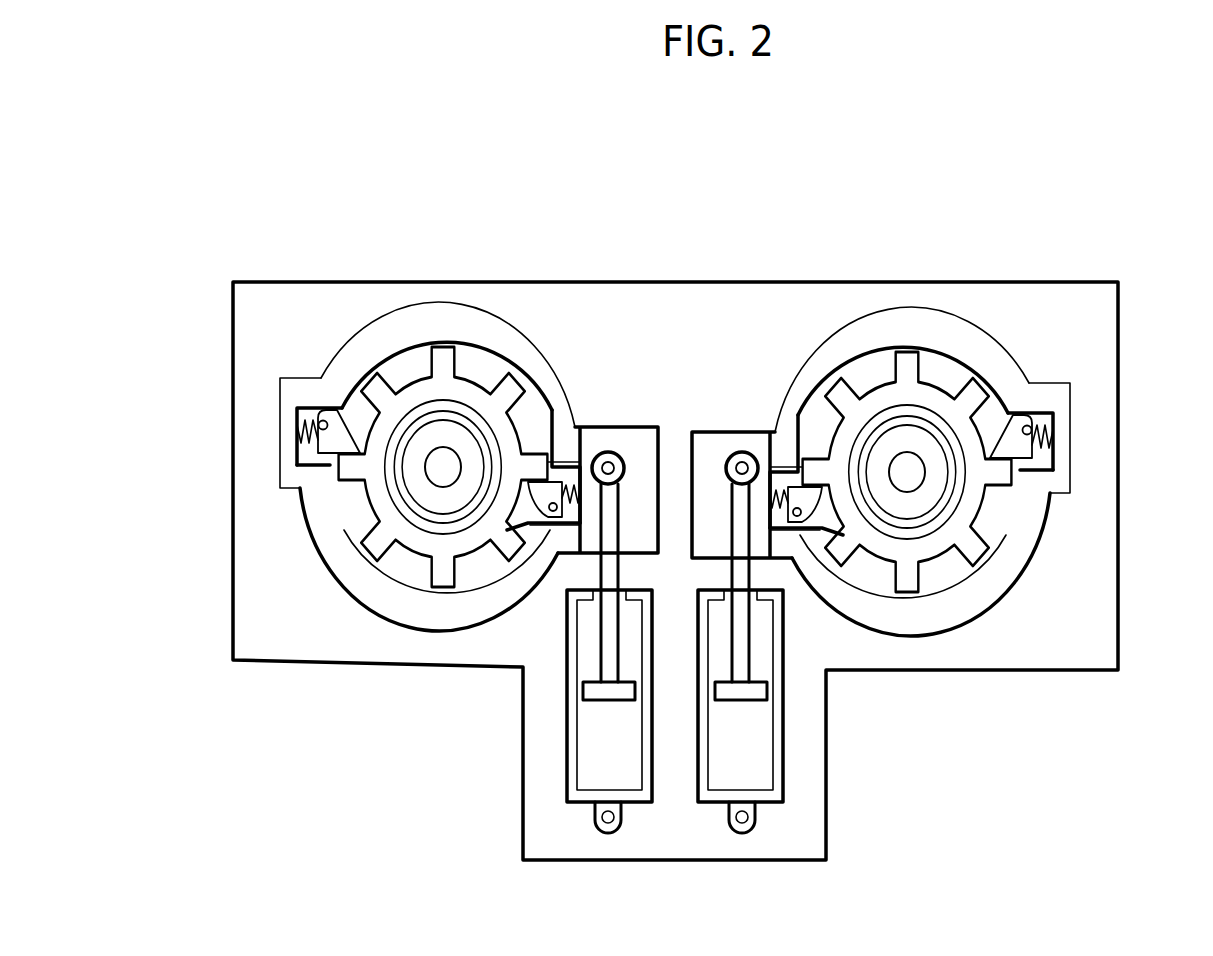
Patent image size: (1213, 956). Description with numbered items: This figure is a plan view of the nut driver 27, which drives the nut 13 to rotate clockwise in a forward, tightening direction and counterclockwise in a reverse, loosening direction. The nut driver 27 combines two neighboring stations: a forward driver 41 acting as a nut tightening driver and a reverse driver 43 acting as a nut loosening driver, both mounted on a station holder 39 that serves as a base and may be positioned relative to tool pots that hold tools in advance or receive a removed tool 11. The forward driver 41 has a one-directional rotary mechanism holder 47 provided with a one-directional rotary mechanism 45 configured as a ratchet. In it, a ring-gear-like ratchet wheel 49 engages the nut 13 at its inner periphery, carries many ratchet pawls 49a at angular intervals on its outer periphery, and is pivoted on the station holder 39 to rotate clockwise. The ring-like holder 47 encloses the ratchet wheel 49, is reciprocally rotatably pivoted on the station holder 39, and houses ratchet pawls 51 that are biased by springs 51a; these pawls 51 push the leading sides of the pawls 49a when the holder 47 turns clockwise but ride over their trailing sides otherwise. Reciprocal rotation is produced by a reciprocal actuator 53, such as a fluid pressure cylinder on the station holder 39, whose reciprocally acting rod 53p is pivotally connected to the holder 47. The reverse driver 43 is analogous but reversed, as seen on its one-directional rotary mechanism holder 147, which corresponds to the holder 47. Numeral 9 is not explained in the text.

The shaft 9 is at (470, 455).
The tool 11 is at (437, 467).
The nut 13 is at (410, 520).
The nut driver 27 is at (710, 256).
The station holder 39 is at (626, 300).
The forward driver 41 is at (913, 306).
The reverse driver 43 is at (448, 303).
The one-directional rotary mechanism 45 is at (964, 420).
The one-directional rotary mechanism holder 47 is at (1027, 517).
The ratchet wheel 49 is at (362, 488).
The ratchet pawls 49a is at (353, 472).
The ratchet pawls 51 is at (335, 425).
The springs 51a is at (573, 462).
The reciprocal actuator 53 is at (585, 735).
The reciprocally acting rod 53p is at (616, 452).
The one-directional rotary mechanism holder 147 is at (352, 560).